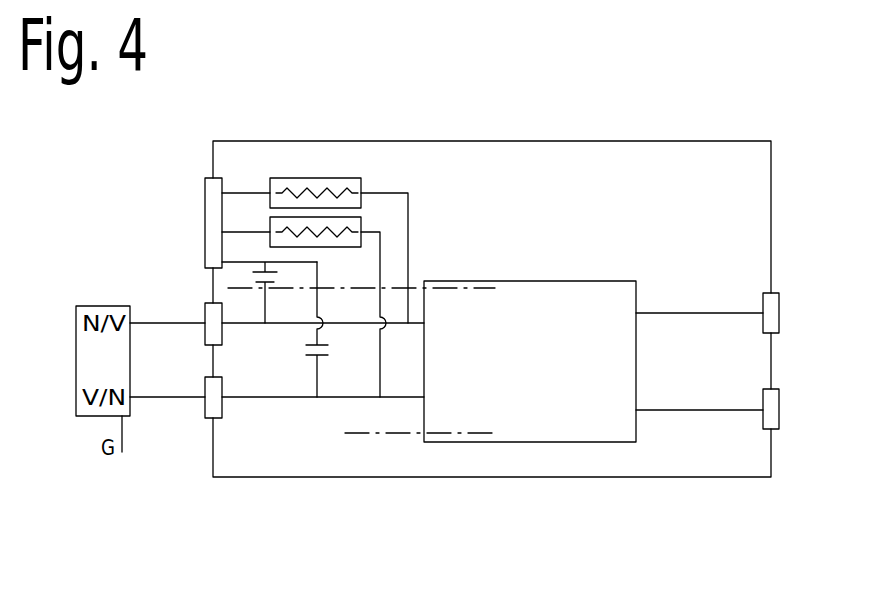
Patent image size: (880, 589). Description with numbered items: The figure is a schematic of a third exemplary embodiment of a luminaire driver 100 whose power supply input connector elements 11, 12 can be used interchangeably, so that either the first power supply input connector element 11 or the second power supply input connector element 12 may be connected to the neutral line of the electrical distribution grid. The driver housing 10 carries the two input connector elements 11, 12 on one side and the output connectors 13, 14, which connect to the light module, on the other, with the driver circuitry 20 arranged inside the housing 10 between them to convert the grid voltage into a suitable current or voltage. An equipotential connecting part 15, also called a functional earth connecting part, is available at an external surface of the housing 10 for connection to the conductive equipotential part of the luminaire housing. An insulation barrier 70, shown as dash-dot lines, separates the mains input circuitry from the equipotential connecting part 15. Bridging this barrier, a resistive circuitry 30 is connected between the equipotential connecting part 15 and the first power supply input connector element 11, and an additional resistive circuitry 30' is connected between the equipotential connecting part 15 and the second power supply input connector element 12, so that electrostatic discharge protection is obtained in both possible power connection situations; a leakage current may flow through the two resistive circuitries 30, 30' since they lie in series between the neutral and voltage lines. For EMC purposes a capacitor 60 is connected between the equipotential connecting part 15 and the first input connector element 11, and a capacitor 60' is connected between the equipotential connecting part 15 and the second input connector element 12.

The luminaire driver 100 is at (612, 133).
The driver housing 10 is at (477, 141).
The first power supply input connector element 11 is at (214, 316).
The second power supply input connector element 12 is at (209, 405).
The output connector 13 is at (774, 308).
The output connector 14 is at (774, 399).
The equipotential connecting part 15 is at (216, 222).
The driver circuitry 20 is at (580, 281).
The resistive circuitry 30 is at (315, 236).
The additional resistive circuitry 30' is at (341, 295).
The capacitor 60 is at (269, 309).
The capacitor 60' is at (298, 329).
The insulation barrier 70 is at (468, 288).